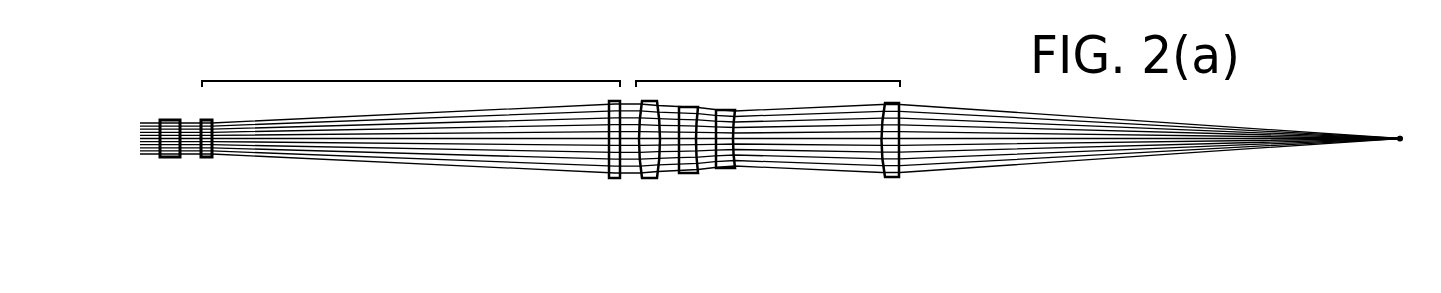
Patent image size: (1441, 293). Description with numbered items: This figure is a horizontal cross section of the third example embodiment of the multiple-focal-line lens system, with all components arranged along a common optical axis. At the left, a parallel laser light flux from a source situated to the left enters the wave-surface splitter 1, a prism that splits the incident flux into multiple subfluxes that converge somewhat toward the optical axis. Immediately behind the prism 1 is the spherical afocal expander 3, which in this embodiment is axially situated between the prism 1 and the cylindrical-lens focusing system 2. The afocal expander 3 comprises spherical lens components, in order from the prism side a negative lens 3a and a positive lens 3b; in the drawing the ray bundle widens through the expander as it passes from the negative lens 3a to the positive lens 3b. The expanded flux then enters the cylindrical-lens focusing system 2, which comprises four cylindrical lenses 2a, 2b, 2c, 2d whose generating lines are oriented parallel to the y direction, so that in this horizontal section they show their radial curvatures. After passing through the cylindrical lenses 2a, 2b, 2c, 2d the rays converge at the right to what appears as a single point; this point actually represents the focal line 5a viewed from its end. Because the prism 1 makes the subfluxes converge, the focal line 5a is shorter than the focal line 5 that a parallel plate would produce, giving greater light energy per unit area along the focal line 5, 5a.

The wave-surface splitter 1 is at (173, 118).
The spherical afocal expander 3 is at (411, 65).
The negative lens 3a is at (205, 158).
The positive lens 3b is at (612, 180).
The cylindrical-lens focusing system 2 is at (768, 64).
The cylindrical lens 2a is at (648, 179).
The cylindrical lens 2b is at (688, 174).
The cylindrical lens 2c is at (727, 169).
The cylindrical lens 2d is at (892, 178).
The focal line 5 is at (1400, 136).
The focal line 5a is at (1400, 138).